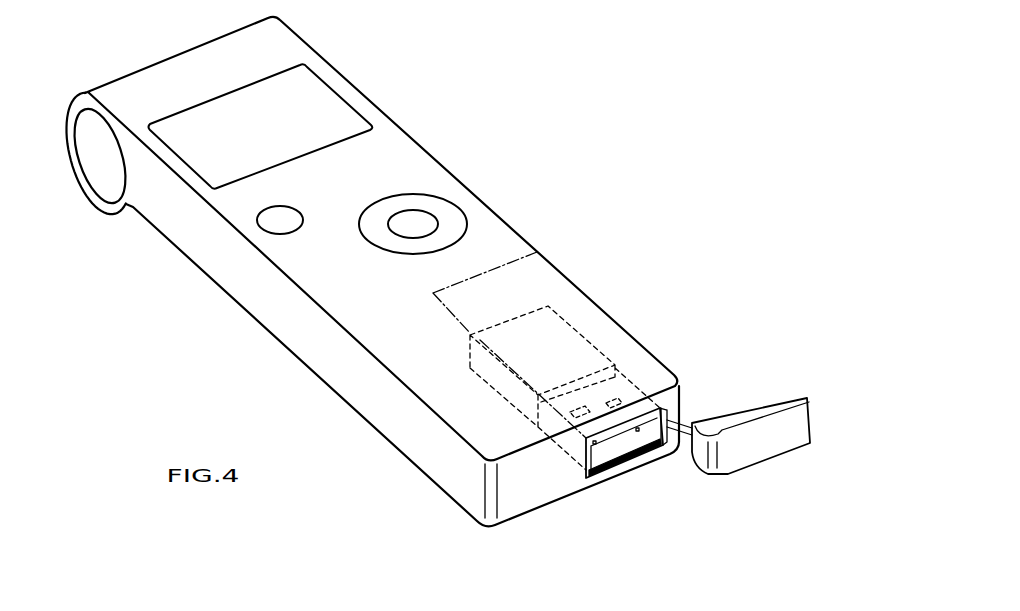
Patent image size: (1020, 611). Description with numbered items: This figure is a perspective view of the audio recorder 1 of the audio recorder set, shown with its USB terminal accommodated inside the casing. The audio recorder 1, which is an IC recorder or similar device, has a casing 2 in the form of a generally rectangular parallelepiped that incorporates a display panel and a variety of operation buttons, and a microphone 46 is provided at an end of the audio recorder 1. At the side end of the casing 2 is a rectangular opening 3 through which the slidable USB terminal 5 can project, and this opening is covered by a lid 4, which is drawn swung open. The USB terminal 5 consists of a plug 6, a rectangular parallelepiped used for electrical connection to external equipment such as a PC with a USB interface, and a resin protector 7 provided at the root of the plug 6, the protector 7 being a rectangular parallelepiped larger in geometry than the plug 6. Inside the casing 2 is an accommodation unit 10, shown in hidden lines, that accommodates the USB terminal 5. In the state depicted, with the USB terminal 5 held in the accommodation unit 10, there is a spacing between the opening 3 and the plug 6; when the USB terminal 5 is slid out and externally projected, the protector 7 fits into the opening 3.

The audio recorder 1 is at (382, 271).
The casing 2 is at (640, 345).
The opening 3 is at (646, 455).
The lid 4 is at (780, 453).
The USB terminal 5 is at (565, 443).
The plug 6 is at (617, 463).
The protector 7 is at (520, 413).
The accommodation unit 10 is at (515, 297).
The microphone 46 is at (102, 178).